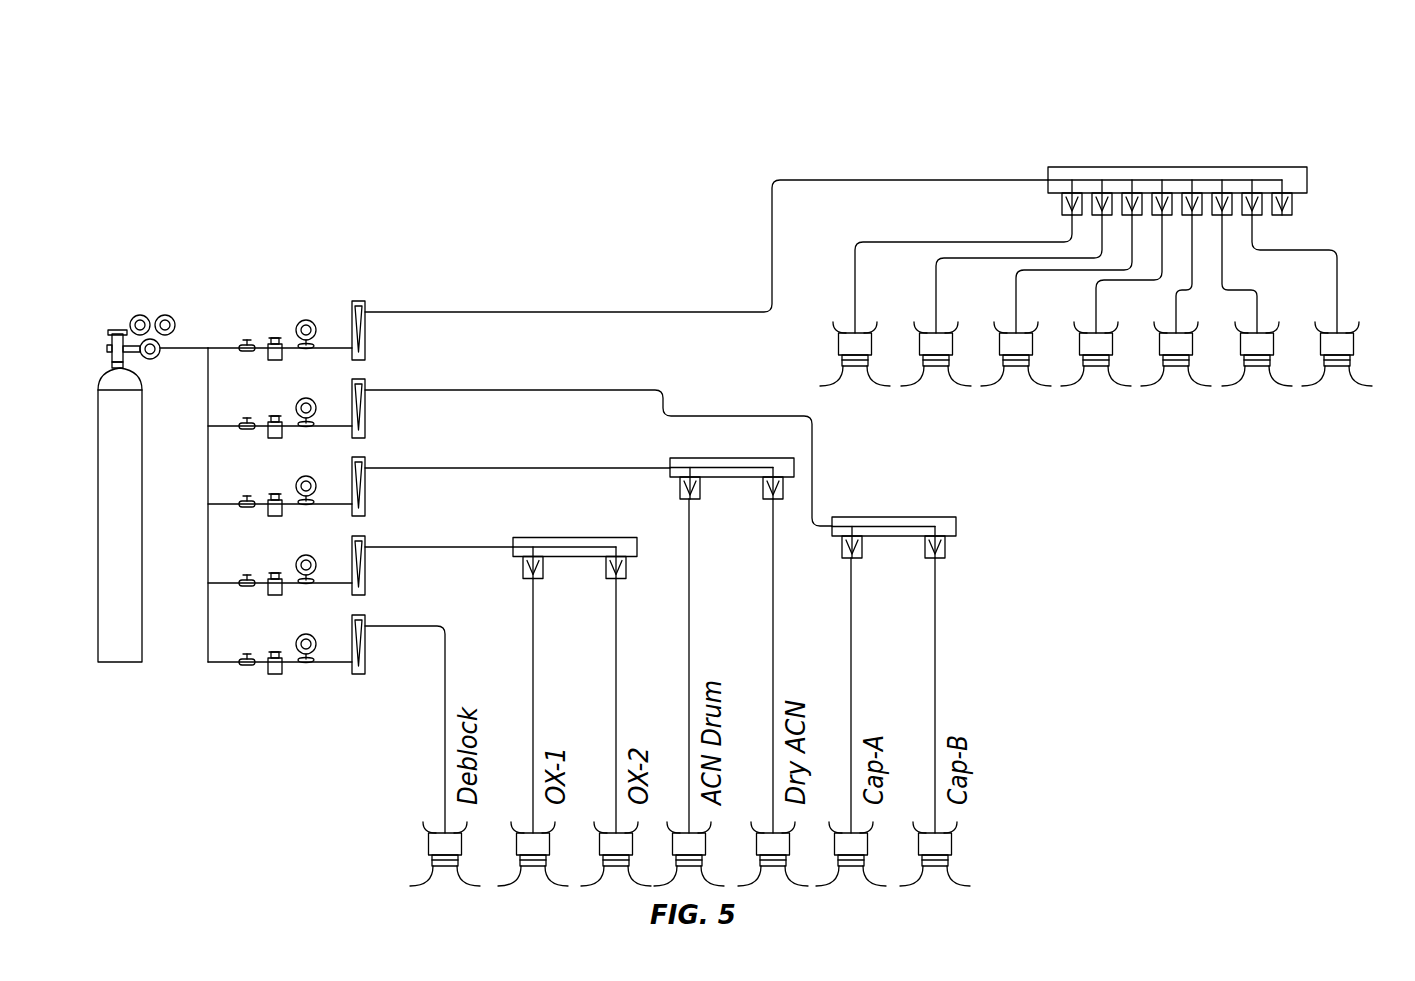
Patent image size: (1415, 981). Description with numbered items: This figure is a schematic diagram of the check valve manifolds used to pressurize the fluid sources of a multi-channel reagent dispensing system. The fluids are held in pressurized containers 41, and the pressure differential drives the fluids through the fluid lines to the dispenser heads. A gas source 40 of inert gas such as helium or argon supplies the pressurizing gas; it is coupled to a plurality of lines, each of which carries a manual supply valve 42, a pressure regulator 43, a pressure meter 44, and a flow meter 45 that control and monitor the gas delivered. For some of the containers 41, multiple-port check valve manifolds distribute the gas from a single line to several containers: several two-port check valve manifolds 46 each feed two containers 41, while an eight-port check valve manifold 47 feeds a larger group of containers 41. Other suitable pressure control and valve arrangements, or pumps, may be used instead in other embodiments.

The gas source 40 is at (120, 662).
The fluid containers 41 is at (838, 348).
The manual supply valve 42 is at (247, 341).
The pressure regulator 43 is at (273, 337).
The pressure meter 44 is at (308, 320).
The flow meter 45 is at (358, 300).
The 2-port check valve manifold 46 is at (578, 537).
The 8-port check valve manifold 47 is at (1050, 167).